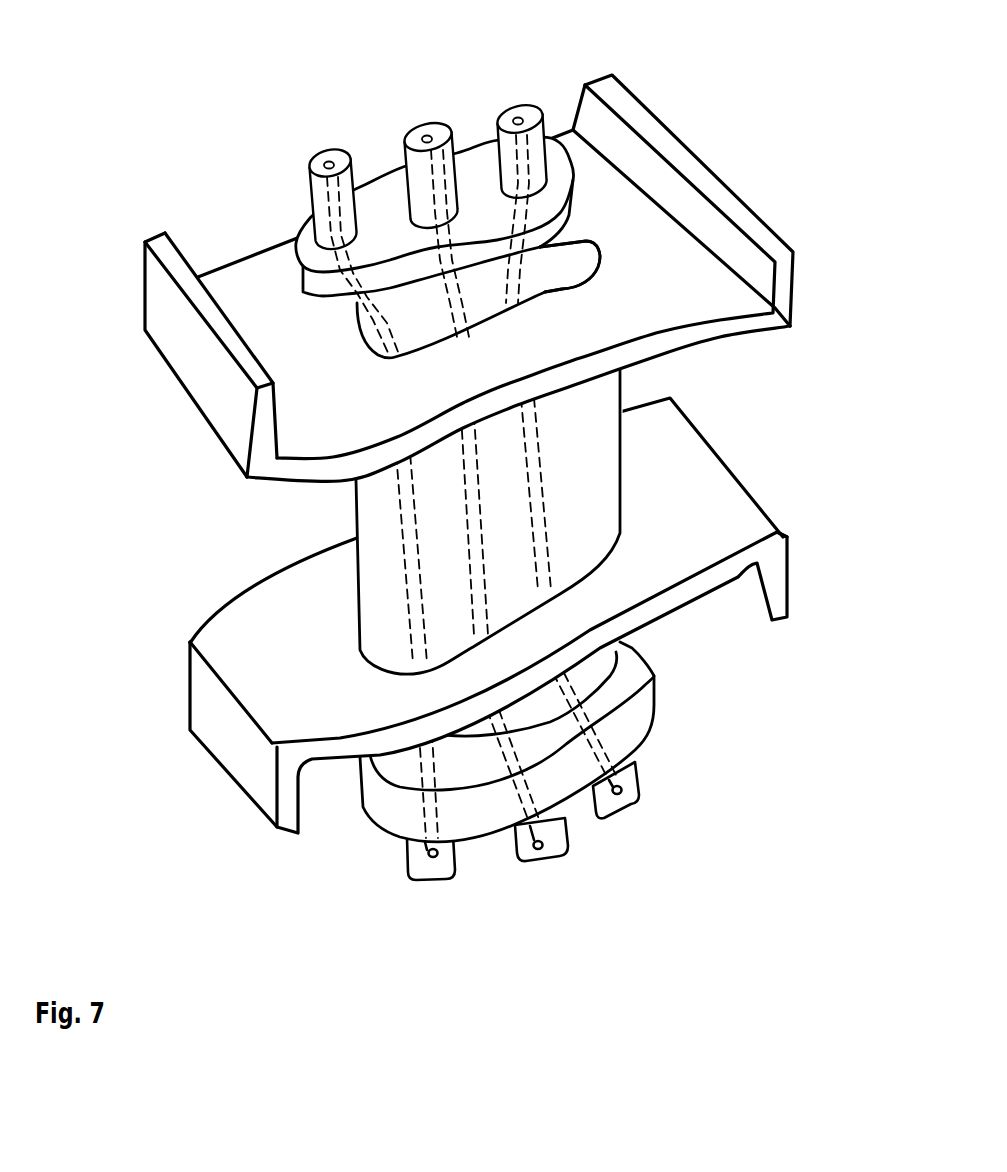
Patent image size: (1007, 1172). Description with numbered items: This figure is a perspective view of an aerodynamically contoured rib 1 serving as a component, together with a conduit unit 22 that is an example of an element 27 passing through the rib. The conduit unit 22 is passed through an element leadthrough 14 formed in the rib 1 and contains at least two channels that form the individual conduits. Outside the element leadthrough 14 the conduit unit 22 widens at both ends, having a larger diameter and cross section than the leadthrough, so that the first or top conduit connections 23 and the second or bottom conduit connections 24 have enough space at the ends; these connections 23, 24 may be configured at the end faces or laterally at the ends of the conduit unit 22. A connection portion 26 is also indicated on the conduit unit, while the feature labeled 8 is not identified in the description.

The rib 1 is at (180, 333).
The notch in core plate 8 is at (567, 257).
The element leadthrough 14 is at (580, 280).
The conduit unit 22 is at (393, 203).
The conduit connection 23 is at (314, 168).
The conduit connection 24 is at (420, 878).
The connection portion 26 is at (365, 808).
The element 27 is at (305, 250).